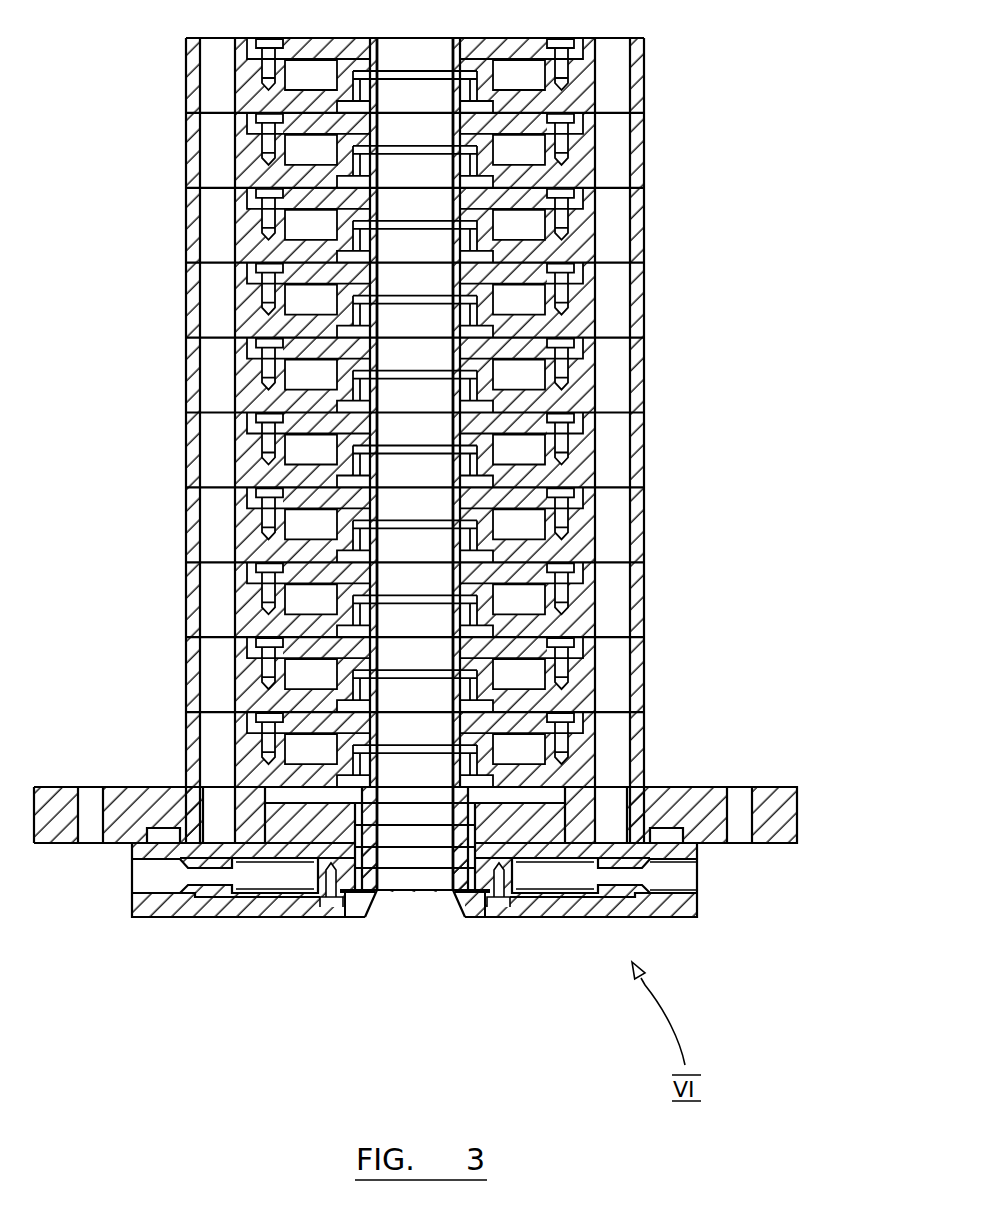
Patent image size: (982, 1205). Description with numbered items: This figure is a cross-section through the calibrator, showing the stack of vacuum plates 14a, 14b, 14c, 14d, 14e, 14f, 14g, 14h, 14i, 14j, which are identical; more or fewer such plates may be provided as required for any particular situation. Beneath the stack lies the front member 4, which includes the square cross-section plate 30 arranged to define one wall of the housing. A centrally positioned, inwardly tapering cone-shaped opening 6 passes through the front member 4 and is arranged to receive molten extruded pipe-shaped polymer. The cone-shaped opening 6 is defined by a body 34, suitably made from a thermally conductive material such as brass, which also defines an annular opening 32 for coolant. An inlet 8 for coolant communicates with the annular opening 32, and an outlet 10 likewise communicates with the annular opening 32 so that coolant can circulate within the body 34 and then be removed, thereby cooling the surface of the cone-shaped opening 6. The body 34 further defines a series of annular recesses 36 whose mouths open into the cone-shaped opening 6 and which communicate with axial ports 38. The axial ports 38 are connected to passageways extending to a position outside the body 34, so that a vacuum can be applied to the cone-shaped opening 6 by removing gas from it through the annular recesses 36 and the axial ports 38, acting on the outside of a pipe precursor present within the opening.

The vacuum plate 14a is at (186, 748).
The vacuum plate 14b is at (186, 673).
The vacuum plate 14c is at (186, 598).
The vacuum plate 14d is at (186, 523).
The vacuum plate 14e is at (186, 448).
The vacuum plate 14f is at (186, 374).
The vacuum plate 14g is at (186, 299).
The vacuum plate 14h is at (186, 224).
The vacuum plate 14i is at (186, 149).
The vacuum plate 14j is at (186, 74).
The front member 4 is at (757, 763).
The square cross-section plate 30 is at (782, 818).
The outlet 10 is at (132, 877).
The inlet 8 is at (698, 878).
The annular opening 32 is at (277, 877).
The body 34 is at (662, 897).
The annular recesses 36 is at (425, 860).
The axial ports 38 is at (355, 893).
The cone-shaped opening 6 is at (407, 917).